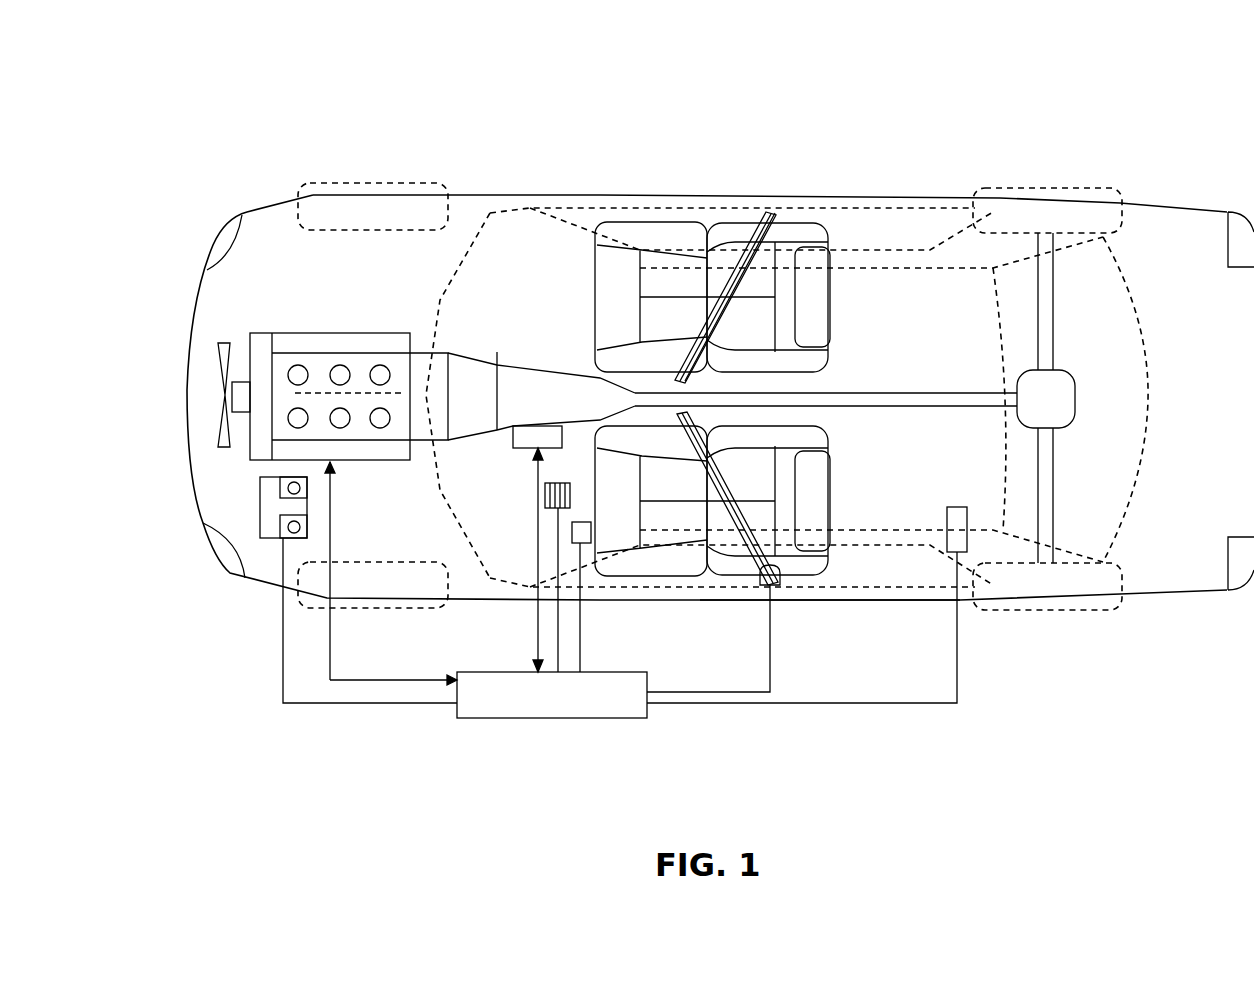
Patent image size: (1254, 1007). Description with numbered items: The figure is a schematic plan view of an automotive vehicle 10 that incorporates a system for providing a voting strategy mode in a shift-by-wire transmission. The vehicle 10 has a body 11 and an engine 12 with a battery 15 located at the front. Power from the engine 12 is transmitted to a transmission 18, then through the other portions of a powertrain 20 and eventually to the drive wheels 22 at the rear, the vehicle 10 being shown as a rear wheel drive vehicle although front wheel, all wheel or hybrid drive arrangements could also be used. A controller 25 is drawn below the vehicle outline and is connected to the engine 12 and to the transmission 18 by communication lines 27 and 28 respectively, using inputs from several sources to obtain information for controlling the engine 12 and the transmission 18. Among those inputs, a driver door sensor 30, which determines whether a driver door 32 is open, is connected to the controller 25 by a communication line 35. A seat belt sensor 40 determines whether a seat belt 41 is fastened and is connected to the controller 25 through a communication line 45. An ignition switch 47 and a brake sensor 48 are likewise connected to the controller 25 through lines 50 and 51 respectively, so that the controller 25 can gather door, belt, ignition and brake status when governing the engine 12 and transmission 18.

The automotive vehicle 10 is at (673, 110).
The body 11 is at (872, 196).
The engine 12 is at (332, 325).
The battery 15 is at (260, 508).
The transmission 18 is at (497, 352).
The powertrain 20 is at (857, 393).
The drive wheels 22 is at (1043, 187).
The controller 25 is at (533, 718).
The communication line 27 is at (330, 652).
The communication line 28 is at (538, 497).
The driver door sensor 30 is at (957, 505).
The driver door 32 is at (907, 592).
The communication line 35 is at (827, 703).
The seat belt sensor 40 is at (783, 579).
The seat belt 41 is at (735, 483).
The communication line 45 is at (705, 692).
The ignition switch 47 is at (585, 522).
The brake sensor 48 is at (557, 483).
The line 50 is at (580, 660).
The line 51 is at (558, 633).